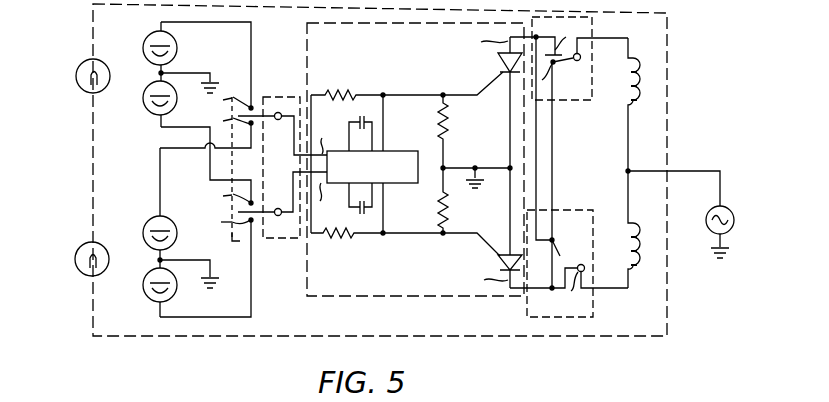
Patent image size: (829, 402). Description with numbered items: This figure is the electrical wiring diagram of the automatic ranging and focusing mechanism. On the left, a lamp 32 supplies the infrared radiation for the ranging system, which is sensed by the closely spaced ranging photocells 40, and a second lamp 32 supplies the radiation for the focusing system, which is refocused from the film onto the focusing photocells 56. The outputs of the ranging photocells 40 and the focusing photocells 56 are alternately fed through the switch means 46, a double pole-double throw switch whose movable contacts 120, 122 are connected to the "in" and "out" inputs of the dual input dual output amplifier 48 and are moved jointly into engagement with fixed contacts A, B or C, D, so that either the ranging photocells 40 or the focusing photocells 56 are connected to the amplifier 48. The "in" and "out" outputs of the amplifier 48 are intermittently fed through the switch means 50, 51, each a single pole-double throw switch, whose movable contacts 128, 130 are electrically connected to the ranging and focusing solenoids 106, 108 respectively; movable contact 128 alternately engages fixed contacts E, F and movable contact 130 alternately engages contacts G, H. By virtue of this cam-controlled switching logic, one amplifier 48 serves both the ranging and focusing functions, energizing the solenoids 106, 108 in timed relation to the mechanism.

The lamp 32 is at (75, 72).
The ranging photocells 40 is at (145, 88).
The focusing photocells 56 is at (147, 250).
The switch means 46 is at (258, 164).
The movable contact 120 is at (262, 108).
The movable contact 122 is at (260, 216).
The dual input dual output amplifier 48 is at (350, 305).
The switch means 50 is at (569, 83).
The switch means 51 is at (569, 244).
The movable contact 128 is at (565, 61).
The movable contact 130 is at (572, 262).
The ranging solenoid 106 is at (643, 104).
The focusing solenoid 108 is at (643, 265).